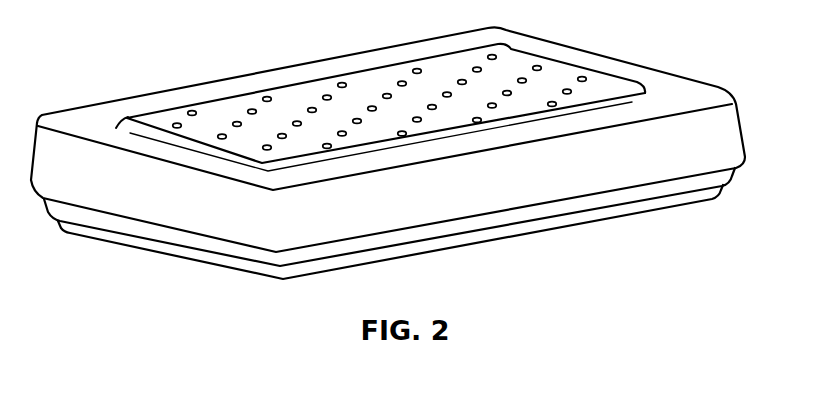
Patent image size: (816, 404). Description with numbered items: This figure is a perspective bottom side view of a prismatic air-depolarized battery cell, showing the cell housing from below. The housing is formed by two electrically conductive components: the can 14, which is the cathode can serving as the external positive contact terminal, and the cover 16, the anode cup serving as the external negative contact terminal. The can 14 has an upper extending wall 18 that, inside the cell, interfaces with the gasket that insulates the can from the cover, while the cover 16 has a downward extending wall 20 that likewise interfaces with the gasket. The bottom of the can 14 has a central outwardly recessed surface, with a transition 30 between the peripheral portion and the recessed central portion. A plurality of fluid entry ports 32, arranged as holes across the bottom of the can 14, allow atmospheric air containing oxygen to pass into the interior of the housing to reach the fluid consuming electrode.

The can 14 is at (611, 67).
The cover 16 is at (621, 208).
The upper extending wall 18 is at (730, 123).
The downward extending wall 20 is at (664, 188).
The transition 30 is at (647, 95).
The fluid entry ports 32 is at (327, 97).